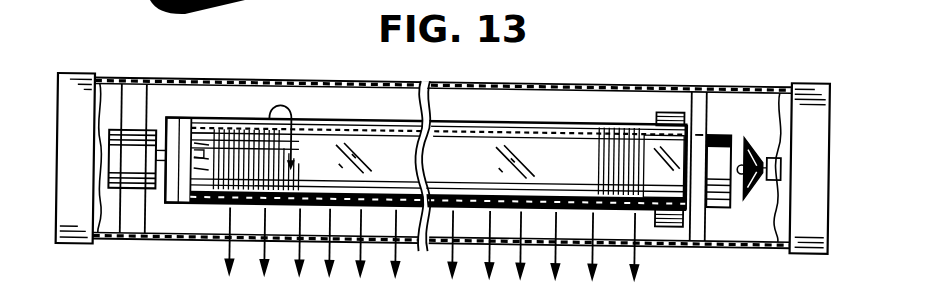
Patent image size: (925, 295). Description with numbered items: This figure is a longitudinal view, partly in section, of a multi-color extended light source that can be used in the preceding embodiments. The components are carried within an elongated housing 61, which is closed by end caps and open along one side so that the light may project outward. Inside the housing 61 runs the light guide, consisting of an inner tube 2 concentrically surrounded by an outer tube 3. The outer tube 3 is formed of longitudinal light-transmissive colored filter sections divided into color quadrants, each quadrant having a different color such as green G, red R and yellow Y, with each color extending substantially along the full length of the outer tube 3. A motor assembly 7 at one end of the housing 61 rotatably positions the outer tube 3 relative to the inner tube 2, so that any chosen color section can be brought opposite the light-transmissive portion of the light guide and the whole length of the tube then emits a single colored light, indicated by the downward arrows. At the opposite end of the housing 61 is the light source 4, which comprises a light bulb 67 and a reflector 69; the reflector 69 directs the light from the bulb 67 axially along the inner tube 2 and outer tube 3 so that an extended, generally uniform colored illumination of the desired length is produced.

The housing 61 is at (729, 80).
The inner tube 2 is at (200, 206).
The motor assembly 7 is at (120, 152).
The outer tube 3 is at (557, 121).
The red color quadrant R is at (360, 118).
The yellow color quadrant Y is at (508, 161).
The green color quadrant G is at (552, 210).
The light bulb 67 is at (743, 166).
The light source 4 is at (759, 201).
The reflector 69 is at (757, 142).